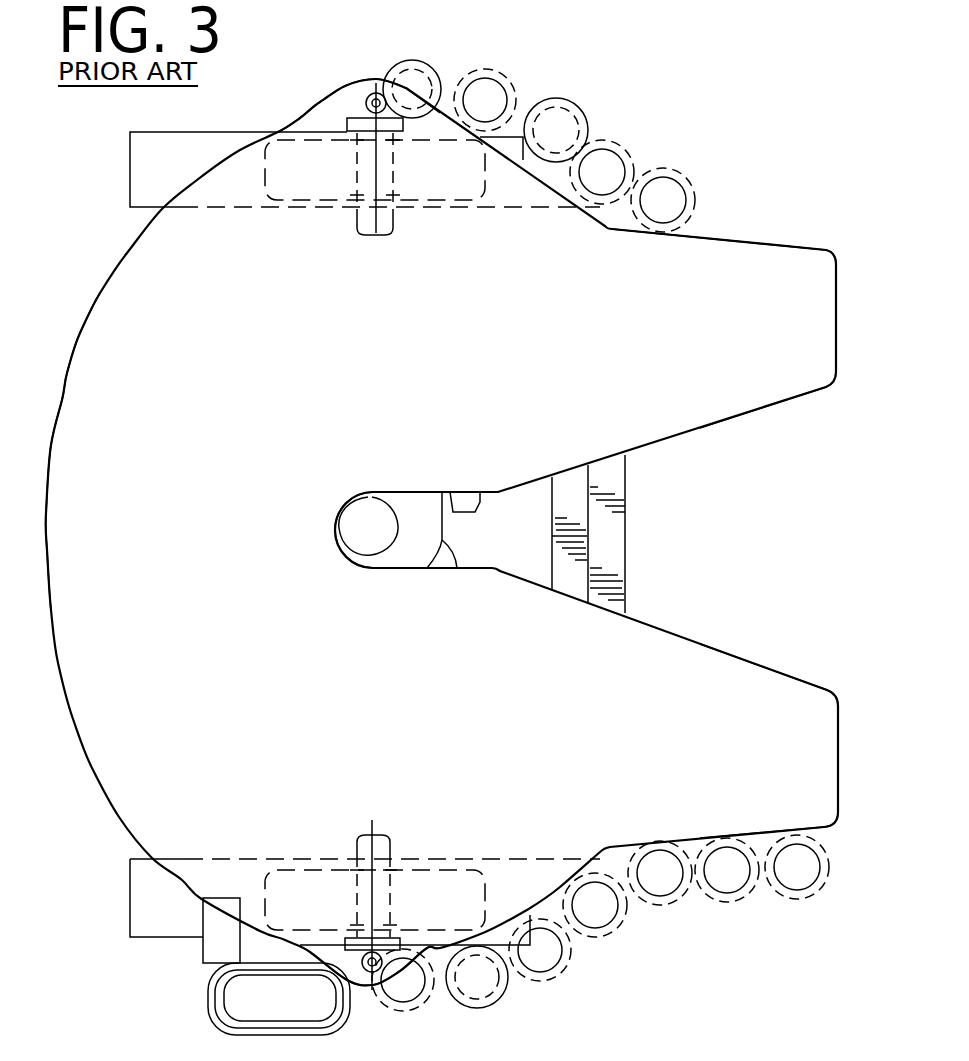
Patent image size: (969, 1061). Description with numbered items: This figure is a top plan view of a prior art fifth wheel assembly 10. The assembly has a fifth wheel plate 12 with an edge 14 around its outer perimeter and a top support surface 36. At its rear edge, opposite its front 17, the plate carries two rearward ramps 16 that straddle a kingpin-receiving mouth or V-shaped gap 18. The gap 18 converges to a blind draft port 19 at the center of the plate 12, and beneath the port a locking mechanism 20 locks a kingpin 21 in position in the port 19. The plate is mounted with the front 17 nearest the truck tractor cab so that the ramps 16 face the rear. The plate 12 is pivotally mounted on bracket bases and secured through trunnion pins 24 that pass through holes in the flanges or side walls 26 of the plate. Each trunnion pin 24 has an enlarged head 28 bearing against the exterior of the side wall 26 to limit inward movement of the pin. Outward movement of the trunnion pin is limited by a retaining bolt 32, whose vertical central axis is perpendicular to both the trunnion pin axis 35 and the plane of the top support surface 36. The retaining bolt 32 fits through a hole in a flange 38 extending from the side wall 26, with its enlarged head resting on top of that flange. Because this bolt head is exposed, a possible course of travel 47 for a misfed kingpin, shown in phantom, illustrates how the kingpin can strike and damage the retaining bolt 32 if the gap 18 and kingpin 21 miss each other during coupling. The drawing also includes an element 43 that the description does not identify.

The fifth wheel assembly 10 is at (742, 855).
The fifth wheel plate 12 is at (550, 877).
The edge 14 is at (593, 860).
The rearward ramps 16 is at (797, 380).
The front 17 is at (50, 417).
The V-shaped gap 18 is at (690, 563).
The blind draft port 19 is at (358, 521).
The locking mechanism 20 is at (417, 555).
The kingpin 21 is at (803, 886).
The trunnion pin 24 is at (386, 194).
The side walls 26 is at (292, 128).
The enlarged head 28 is at (337, 102).
The retaining bolt 32 is at (383, 100).
The trunnion pin axis 35 is at (377, 240).
The top support surface 36 is at (257, 635).
The flange 38 is at (445, 110).
The release handle 43 is at (210, 1008).
The course of travel 47 is at (390, 66).